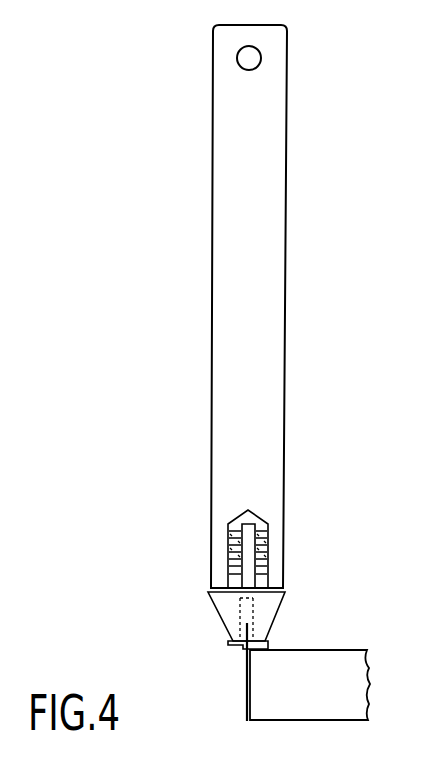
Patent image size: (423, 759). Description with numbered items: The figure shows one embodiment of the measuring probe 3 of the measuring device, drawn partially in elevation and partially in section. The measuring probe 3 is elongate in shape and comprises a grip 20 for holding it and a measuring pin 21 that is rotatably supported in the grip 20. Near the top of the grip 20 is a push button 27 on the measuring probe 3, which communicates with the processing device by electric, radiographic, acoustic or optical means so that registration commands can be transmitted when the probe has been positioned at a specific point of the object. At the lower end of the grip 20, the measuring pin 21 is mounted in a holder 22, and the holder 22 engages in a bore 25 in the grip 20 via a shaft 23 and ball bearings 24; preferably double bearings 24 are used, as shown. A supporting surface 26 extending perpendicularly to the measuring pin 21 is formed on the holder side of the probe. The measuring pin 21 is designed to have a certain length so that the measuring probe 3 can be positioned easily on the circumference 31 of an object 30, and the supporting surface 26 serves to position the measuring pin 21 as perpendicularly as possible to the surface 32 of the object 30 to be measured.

The measuring probe 3 is at (255, 205).
The grip 20 is at (287, 113).
The measuring pin 21 is at (246, 685).
The holder 22 is at (225, 605).
The shaft 23 is at (248, 547).
The ball bearings 24 is at (229, 537).
The bore 25 is at (244, 577).
The supporting surface 26 is at (235, 650).
The push button 27 is at (249, 58).
The object 30 is at (332, 683).
The circumference 31 is at (246, 712).
The surface 32 is at (338, 645).